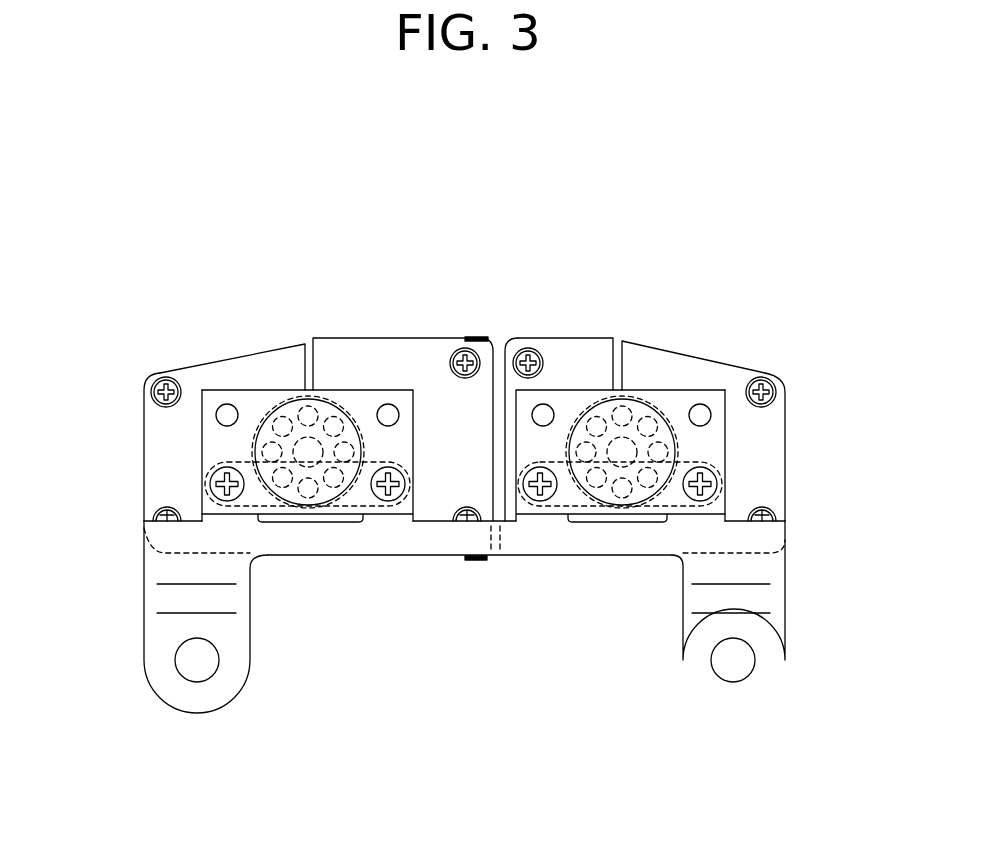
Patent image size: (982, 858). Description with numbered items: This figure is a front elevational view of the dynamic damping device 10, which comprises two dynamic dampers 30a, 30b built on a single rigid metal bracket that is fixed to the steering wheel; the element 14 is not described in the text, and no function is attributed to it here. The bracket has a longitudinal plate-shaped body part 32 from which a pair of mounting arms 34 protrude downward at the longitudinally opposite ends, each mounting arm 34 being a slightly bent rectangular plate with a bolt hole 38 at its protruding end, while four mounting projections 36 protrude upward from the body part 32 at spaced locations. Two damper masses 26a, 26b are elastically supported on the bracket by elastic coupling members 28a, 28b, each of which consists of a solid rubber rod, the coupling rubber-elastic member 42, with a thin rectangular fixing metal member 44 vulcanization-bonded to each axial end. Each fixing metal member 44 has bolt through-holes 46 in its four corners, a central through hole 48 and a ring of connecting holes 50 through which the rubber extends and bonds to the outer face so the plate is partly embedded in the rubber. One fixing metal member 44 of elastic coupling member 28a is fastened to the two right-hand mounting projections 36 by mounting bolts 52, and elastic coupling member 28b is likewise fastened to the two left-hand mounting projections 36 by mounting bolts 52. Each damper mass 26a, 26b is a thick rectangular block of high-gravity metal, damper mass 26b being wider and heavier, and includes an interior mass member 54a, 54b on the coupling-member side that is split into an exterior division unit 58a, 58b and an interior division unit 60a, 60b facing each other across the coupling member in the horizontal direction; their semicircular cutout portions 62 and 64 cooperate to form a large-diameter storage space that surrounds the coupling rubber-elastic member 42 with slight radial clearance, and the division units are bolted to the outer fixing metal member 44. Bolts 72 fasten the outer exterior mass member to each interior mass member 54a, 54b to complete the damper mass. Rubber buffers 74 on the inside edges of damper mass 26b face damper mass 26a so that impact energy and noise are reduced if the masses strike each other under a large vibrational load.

The dynamic damping device 10 is at (720, 257).
The base plate 14 is at (478, 572).
The damper mass 26a is at (789, 386).
The damper mass 26b is at (138, 424).
The elastic coupling member 28a is at (727, 378).
The elastic coupling member 28b is at (203, 378).
The dynamic damper 30a is at (790, 415).
The dynamic damper 30b is at (137, 395).
The body part 32 is at (497, 535).
The mounting arm 34 is at (166, 595).
The mounting projection 36 is at (273, 527).
The bolt hole 38 is at (187, 671).
The coupling rubber-elastic member 42 is at (250, 470).
The fixing metal member 44 is at (203, 413).
The bolt through-hole 46 is at (228, 404).
The central through hole 48 is at (677, 467).
The connecting hole 50 is at (262, 430).
The mounting bolt 52 is at (230, 492).
The interior mass member 54a is at (578, 232).
The interior mass member 54b is at (262, 232).
The exterior division unit 58a is at (630, 350).
The exterior division unit 58b is at (300, 345).
The interior division unit 60a is at (596, 350).
The interior division unit 60b is at (336, 350).
The cutout portion 62 is at (245, 447).
The cutout portion 64 is at (360, 505).
The bolt 72 is at (166, 376).
The rubber buffer 74 is at (485, 336).